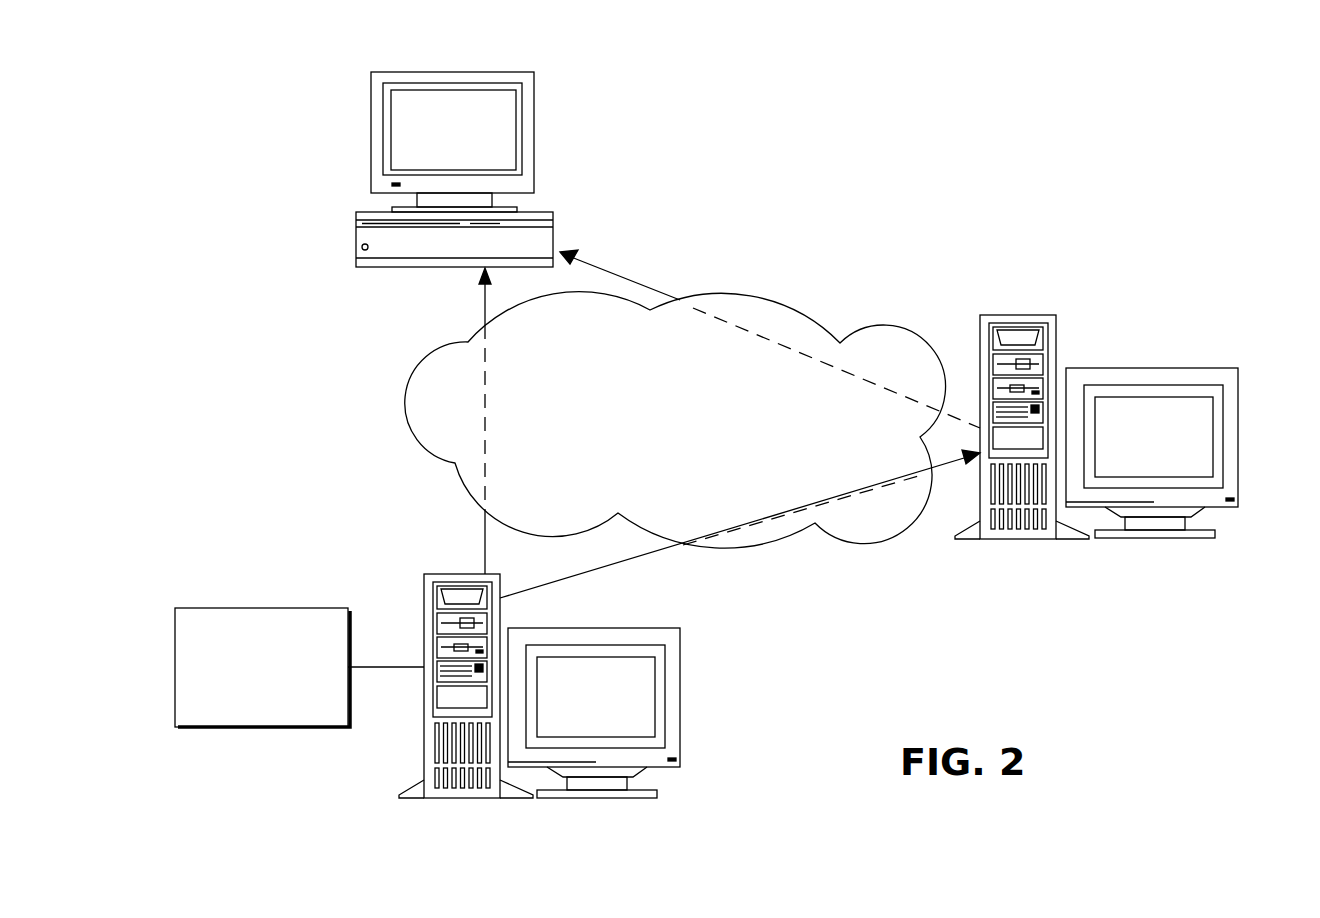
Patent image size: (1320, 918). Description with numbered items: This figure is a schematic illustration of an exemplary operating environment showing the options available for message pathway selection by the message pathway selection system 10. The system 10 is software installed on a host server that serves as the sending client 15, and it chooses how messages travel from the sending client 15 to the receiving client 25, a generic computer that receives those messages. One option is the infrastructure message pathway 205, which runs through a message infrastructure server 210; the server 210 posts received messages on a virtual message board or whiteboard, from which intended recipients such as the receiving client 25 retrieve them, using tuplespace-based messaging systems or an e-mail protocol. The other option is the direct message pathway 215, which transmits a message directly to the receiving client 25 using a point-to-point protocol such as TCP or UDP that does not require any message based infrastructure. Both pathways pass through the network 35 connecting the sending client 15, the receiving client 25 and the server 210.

The message pathway selection system 10 is at (175, 646).
The sending client 15 is at (424, 615).
The receiving client 25 is at (534, 118).
The network 35 is at (775, 543).
The infrastructure message pathway 205 is at (630, 277).
The message infrastructure server 210 is at (980, 358).
The direct message pathway 215 is at (485, 405).